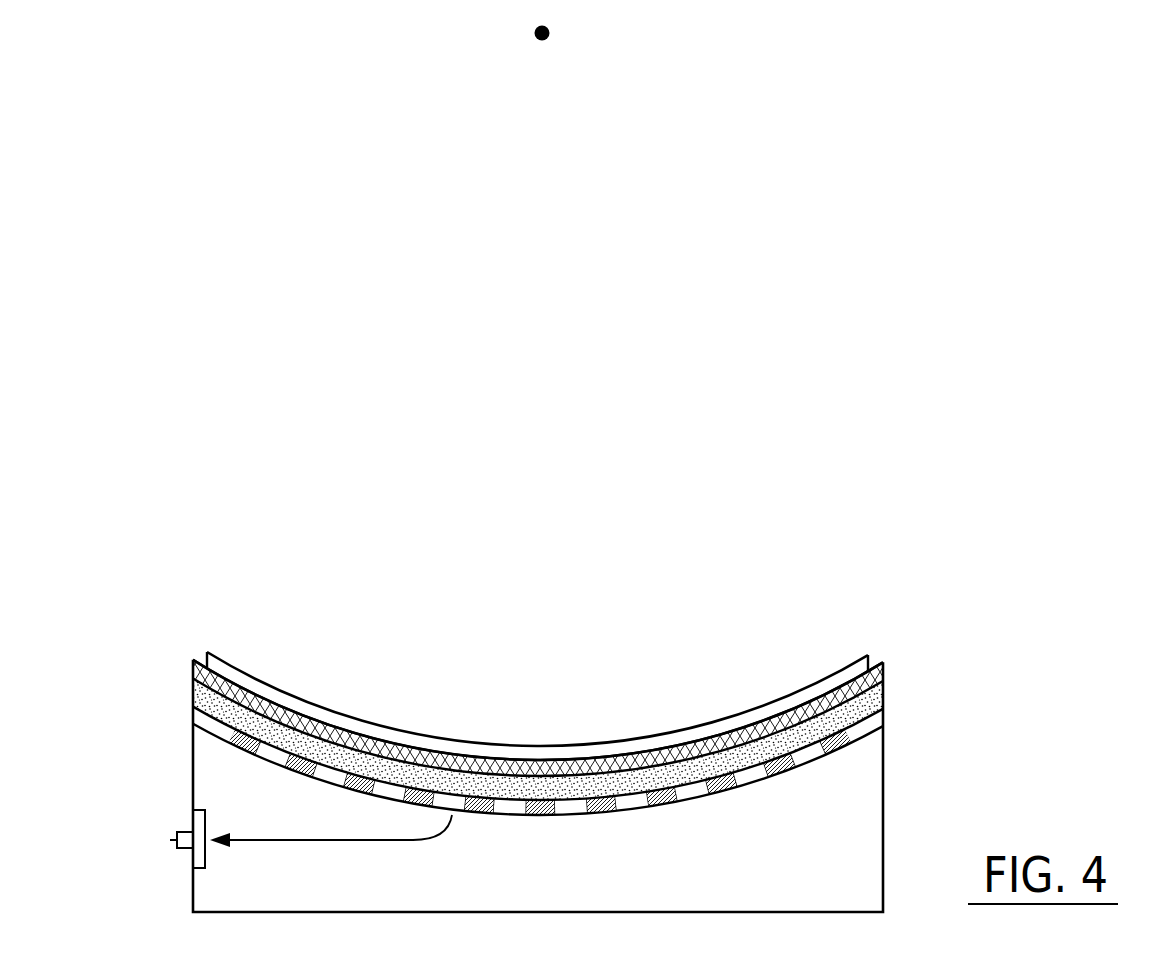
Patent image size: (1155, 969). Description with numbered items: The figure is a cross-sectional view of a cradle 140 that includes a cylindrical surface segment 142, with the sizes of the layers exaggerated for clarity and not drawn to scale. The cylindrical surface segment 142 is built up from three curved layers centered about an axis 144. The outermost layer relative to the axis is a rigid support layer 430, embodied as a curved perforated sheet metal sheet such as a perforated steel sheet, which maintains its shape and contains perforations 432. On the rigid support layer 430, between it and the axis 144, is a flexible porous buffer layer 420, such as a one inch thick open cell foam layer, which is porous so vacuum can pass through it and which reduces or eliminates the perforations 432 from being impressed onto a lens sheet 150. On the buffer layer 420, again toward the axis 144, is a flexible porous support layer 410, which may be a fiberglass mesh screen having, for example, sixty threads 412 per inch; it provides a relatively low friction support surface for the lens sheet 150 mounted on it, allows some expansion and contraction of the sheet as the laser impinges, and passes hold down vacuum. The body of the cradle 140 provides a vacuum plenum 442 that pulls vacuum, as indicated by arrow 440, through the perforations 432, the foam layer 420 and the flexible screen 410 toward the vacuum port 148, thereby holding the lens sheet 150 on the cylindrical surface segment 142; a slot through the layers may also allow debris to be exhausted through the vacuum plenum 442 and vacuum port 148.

The cradle 140 is at (884, 812).
The cylindrical surface segment 142 is at (722, 815).
The axis 144 is at (548, 40).
The vacuum port 148 is at (175, 837).
The lens sheet 150 is at (335, 725).
The flexible porous support layer 410 is at (548, 767).
The threads 412 is at (690, 748).
The flexible porous buffer layer 420 is at (442, 785).
The rigid support layer 430 is at (465, 812).
The perforations 432 is at (567, 812).
The arrow 440 is at (280, 840).
The vacuum plenum 442 is at (722, 897).